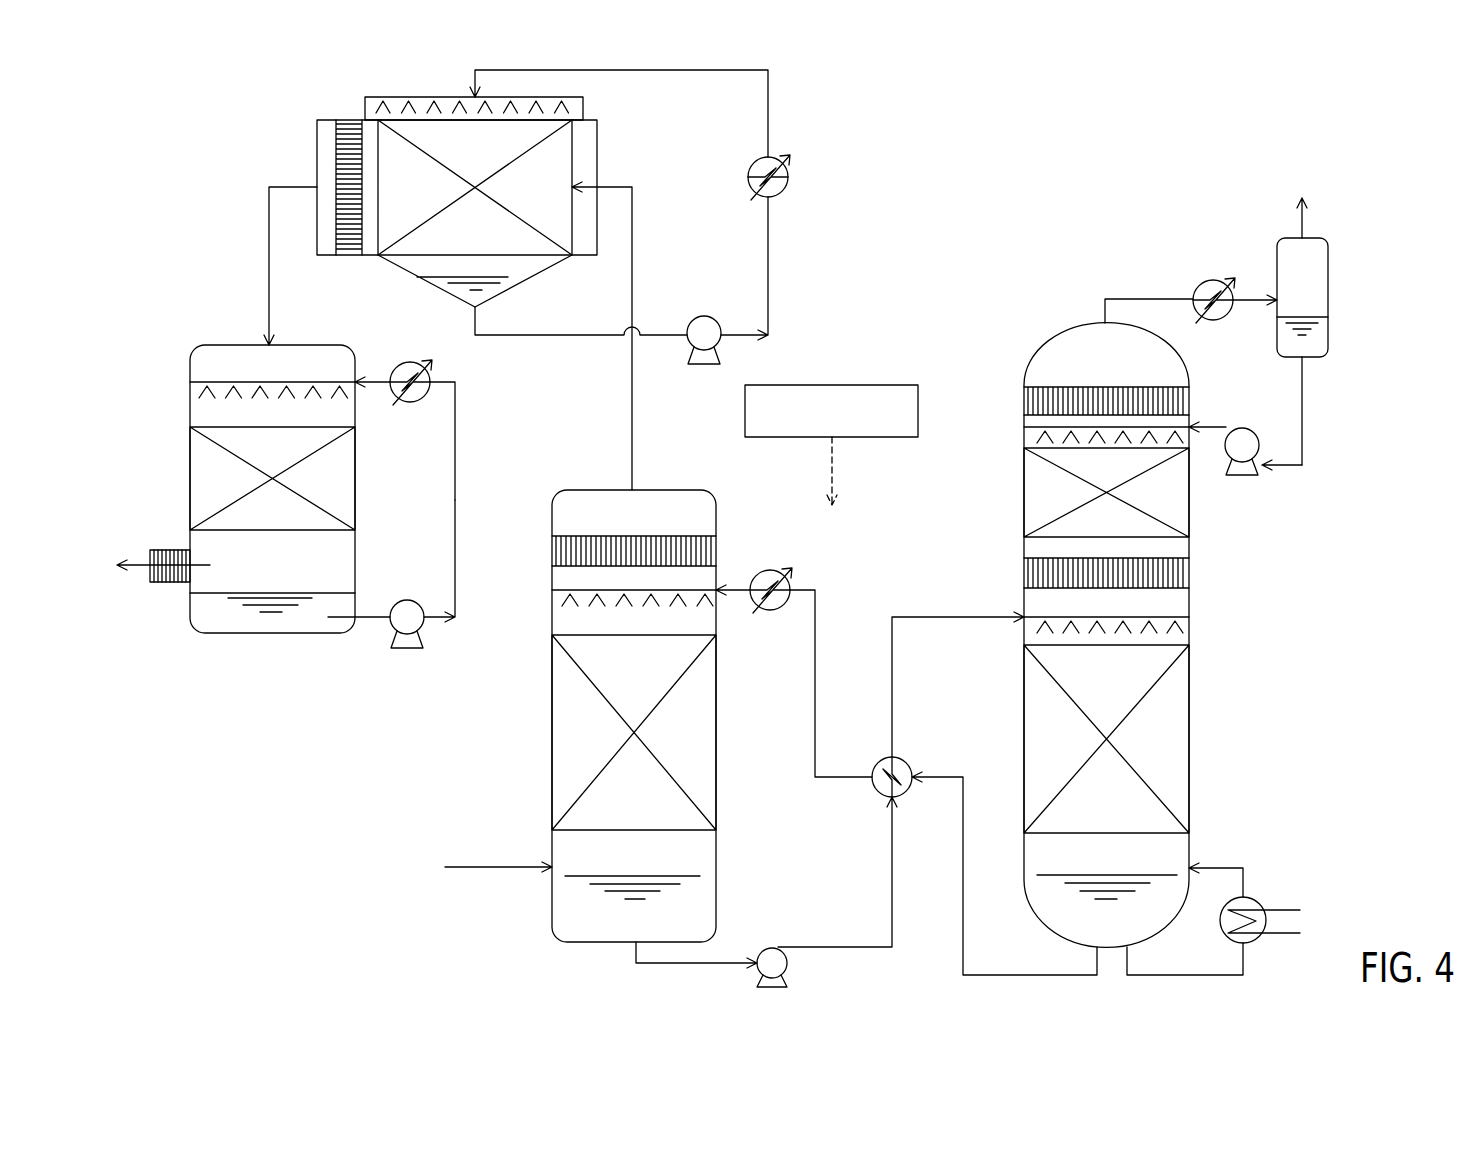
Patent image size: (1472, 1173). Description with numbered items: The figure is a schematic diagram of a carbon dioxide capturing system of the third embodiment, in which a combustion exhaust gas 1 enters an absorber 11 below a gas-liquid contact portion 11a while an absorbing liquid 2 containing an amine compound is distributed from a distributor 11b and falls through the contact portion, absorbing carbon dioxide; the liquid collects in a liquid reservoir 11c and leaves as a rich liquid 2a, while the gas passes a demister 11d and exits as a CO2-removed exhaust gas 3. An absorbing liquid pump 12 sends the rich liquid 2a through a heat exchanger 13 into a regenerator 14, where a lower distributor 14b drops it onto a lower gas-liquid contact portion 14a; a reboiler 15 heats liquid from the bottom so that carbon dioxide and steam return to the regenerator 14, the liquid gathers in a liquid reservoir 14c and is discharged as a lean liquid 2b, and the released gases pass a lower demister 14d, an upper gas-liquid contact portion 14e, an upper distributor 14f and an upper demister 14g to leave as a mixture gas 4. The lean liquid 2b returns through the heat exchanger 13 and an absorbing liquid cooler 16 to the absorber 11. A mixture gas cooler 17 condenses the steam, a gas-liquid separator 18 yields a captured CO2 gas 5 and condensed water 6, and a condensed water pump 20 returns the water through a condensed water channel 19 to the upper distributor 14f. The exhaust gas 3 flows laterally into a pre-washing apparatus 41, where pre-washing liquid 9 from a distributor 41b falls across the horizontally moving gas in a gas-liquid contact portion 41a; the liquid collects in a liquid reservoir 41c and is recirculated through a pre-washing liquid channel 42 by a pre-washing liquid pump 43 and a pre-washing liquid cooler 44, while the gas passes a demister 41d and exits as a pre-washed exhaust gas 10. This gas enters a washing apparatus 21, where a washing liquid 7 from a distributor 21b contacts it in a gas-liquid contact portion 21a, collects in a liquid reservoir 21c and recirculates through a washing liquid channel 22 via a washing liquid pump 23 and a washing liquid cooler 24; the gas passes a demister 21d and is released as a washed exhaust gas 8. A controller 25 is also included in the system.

The combustion exhaust gas 1 is at (496, 866).
The absorbing liquid 2 is at (937, 840).
The rich liquid 2a is at (850, 946).
The lean liquid 2b is at (946, 770).
The CO2-removed exhaust gas 3 is at (632, 430).
The mixture gas 4 is at (1142, 298).
The captured CO2 gas 5 is at (1306, 221).
The condensed water 6 is at (1302, 420).
The washing liquid 7 is at (456, 416).
The washed exhaust gas 8 is at (142, 556).
The pre-washing liquid 9 is at (770, 110).
The pre-washed exhaust gas 10 is at (283, 185).
The absorber 11 is at (634, 716).
The gas-liquid contact portion 11a is at (552, 738).
The distributor 11b is at (555, 595).
The liquid reservoir 11c is at (565, 913).
The demister 11d is at (716, 538).
The absorbing liquid pump 12 is at (772, 948).
The heat exchanger 13 is at (876, 762).
The regenerator 14 is at (1112, 622).
The lower gas-liquid contact portion 14a is at (1189, 748).
The lower distributor 14b is at (1189, 626).
The liquid reservoir 14c is at (1052, 914).
The lower demister 14d is at (1024, 578).
The upper gas-liquid contact portion 14e is at (1024, 493).
The upper distributor 14f is at (1024, 434).
The upper demister 14g is at (1024, 400).
The reboiler 15 is at (1258, 898).
The absorbing liquid cooler 16 is at (770, 612).
The mixture gas cooler 17 is at (1214, 280).
The gas-liquid separator 18 is at (1330, 284).
The condensed water channel 19 is at (1283, 468).
The condensed water pump 20 is at (1246, 428).
The washing apparatus 21 is at (235, 486).
The gas-liquid contact portion 21a is at (190, 450).
The distributor 21b is at (196, 386).
The liquid reservoir 21c is at (283, 633).
The demister 21d is at (172, 583).
The washing liquid channel 22 is at (456, 490).
The washing liquid pump 23 is at (408, 600).
The washing liquid cooler 24 is at (410, 403).
The controller 25 is at (832, 385).
The pre-washing apparatus 41 is at (491, 211).
The gas-liquid contact portion 41a is at (407, 258).
The distributor 41b is at (372, 102).
The liquid reservoir 41c is at (505, 285).
The demister 41d is at (350, 258).
The pre-washing liquid channel 42 is at (770, 250).
The pre-washing liquid pump 43 is at (704, 316).
The pre-washing liquid cooler 44 is at (790, 172).